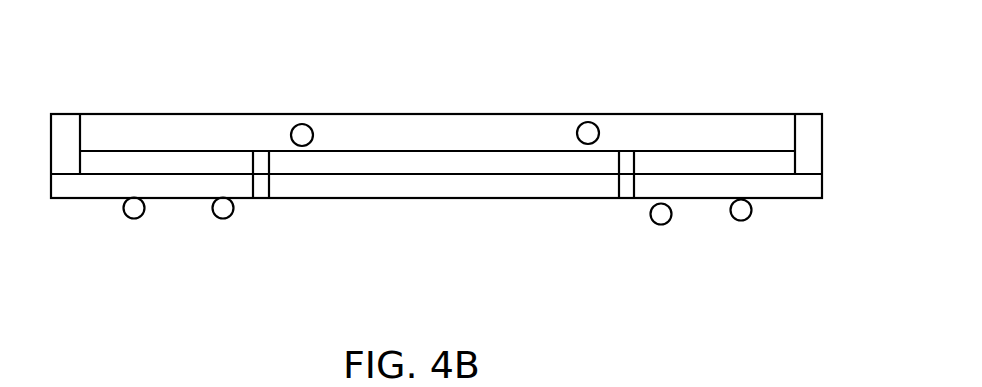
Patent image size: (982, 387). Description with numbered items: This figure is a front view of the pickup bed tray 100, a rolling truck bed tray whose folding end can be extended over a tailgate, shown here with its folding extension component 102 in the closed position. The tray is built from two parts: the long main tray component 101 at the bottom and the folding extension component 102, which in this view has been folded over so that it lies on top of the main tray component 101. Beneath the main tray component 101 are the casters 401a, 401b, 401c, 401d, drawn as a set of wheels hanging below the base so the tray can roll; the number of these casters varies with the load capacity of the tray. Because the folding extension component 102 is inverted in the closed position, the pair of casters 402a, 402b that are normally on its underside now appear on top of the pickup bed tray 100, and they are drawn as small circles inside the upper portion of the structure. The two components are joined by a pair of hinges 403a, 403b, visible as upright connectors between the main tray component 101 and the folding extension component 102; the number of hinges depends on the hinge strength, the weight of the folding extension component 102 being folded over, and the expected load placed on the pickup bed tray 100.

The pickup bed tray 100 is at (131, 65).
The main tray component 101 is at (765, 190).
The folding extension component 102 is at (435, 158).
The caster 401a is at (223, 219).
The caster 401b is at (661, 225).
The caster 401c is at (134, 219).
The caster 401d is at (741, 220).
The caster 402a is at (300, 124).
The caster 402b is at (588, 133).
The hinge 403a is at (259, 190).
The hinge 403b is at (625, 193).